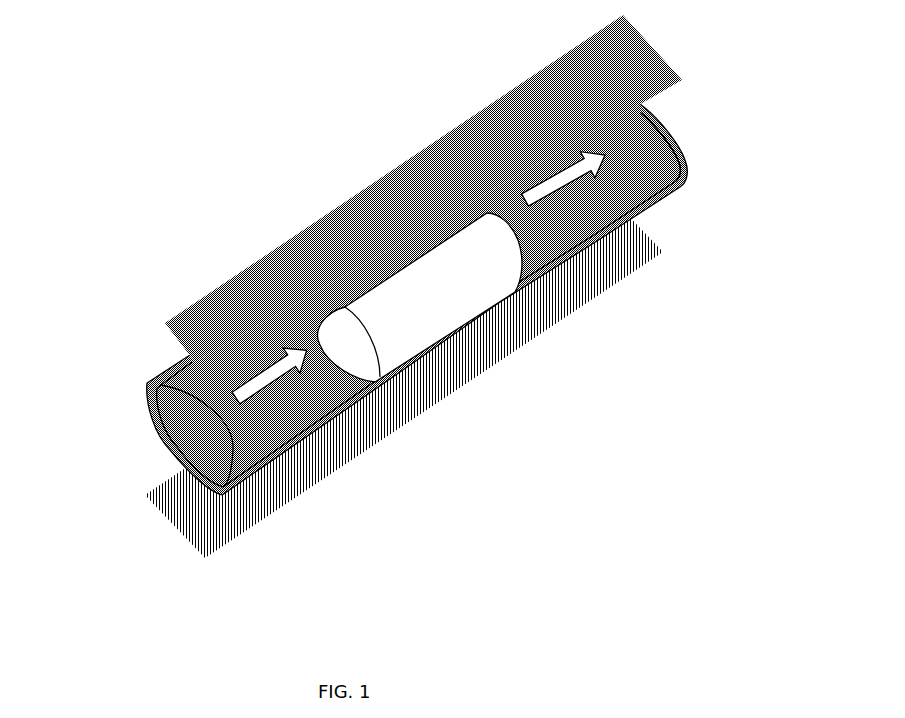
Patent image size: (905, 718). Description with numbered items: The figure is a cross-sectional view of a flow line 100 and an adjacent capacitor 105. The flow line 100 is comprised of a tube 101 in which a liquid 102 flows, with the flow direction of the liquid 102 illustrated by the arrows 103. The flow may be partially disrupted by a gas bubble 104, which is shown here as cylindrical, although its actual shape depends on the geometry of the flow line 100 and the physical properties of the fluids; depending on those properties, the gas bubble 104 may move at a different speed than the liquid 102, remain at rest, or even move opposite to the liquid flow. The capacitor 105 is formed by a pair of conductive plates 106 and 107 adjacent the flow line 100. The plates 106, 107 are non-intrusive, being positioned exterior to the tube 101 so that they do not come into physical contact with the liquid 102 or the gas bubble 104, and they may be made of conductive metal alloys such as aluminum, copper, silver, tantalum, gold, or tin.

The flow line 100 is at (436, 286).
The tube 101 is at (417, 330).
The liquid 102 is at (272, 449).
The arrows 103 is at (277, 373).
The gas bubble 104 is at (430, 302).
The capacitor 105 is at (347, 404).
The conductive plate 106 is at (190, 312).
The conductive plate 107 is at (222, 532).